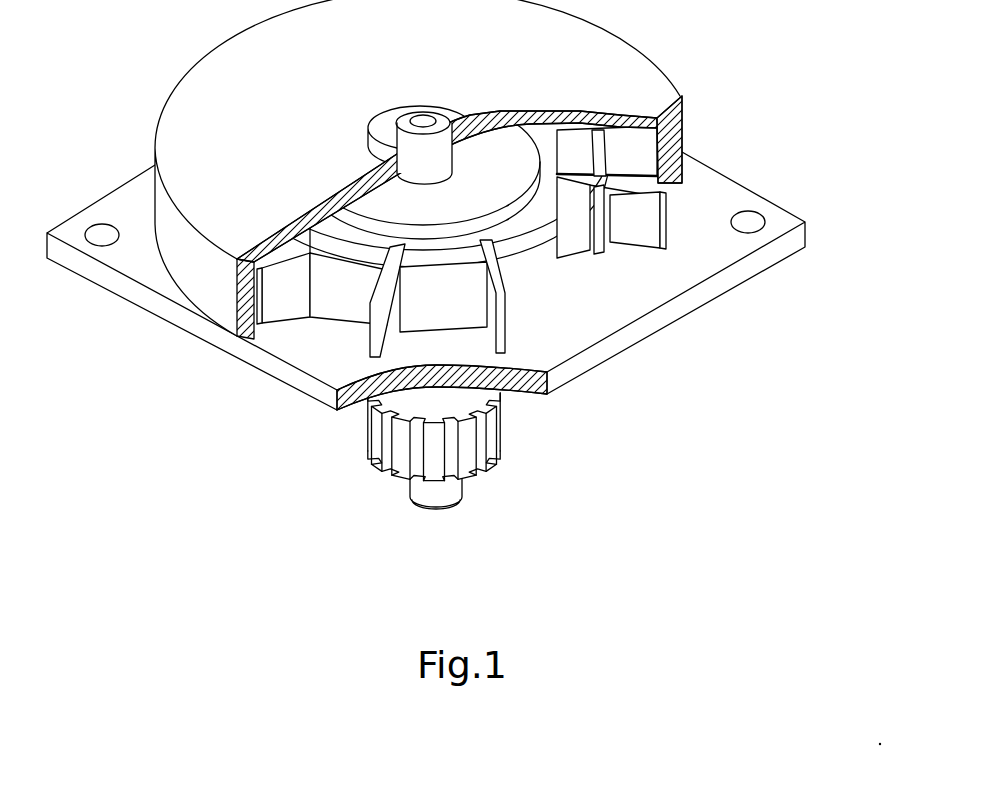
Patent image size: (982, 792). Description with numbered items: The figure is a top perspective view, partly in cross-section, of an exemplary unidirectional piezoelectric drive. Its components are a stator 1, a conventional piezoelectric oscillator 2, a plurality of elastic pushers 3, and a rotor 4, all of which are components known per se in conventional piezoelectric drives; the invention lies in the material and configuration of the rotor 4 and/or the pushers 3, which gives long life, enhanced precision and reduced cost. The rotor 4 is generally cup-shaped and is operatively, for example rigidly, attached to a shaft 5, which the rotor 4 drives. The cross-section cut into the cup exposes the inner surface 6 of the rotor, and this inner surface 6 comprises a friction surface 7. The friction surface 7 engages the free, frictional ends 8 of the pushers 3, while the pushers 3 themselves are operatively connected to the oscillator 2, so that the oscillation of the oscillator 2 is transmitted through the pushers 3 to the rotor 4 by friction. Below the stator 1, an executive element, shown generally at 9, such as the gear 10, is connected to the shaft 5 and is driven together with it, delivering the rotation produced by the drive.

The stator 1 is at (125, 253).
The piezoelectric oscillator 2 is at (510, 218).
The elastic pushers 3 is at (295, 293).
The rotor 4 is at (203, 267).
The shaft 5 is at (435, 488).
The inner surface 6 is at (674, 171).
The friction surface 7 is at (685, 130).
The free frictional ends 8 is at (256, 318).
The executive element 9 is at (352, 466).
The gear 10 is at (497, 450).